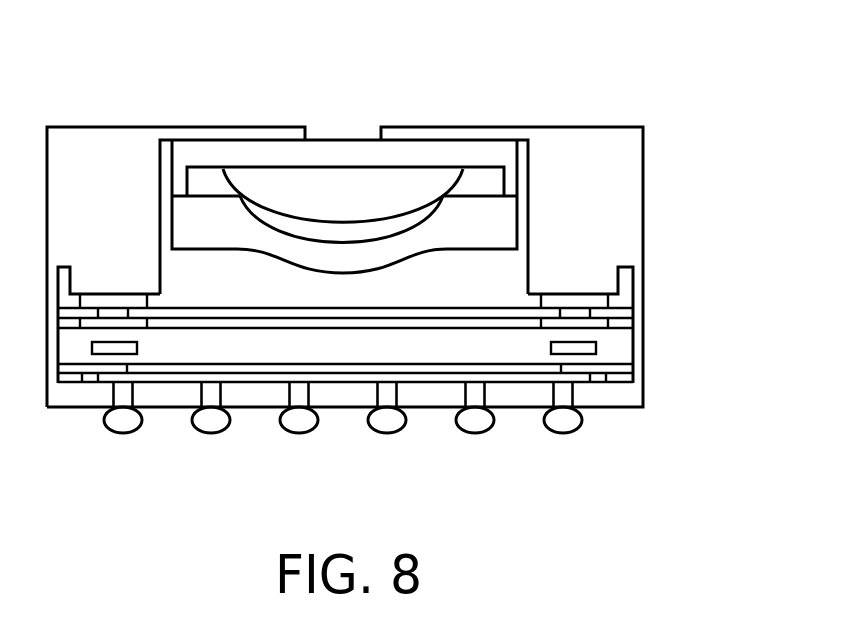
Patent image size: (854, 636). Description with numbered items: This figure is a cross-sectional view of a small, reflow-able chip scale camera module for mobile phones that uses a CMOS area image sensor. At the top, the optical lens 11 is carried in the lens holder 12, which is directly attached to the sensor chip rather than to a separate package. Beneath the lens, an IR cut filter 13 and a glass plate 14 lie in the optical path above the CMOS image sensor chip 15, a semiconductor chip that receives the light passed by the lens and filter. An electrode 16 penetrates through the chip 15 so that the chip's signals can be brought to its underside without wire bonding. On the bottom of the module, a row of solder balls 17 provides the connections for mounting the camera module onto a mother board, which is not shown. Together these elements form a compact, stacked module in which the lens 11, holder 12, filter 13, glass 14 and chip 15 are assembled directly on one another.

The optical lens 11 is at (335, 184).
The lens holder 12 is at (82, 160).
The IR cut filter 13 is at (477, 307).
The glass plate 14 is at (618, 347).
The CMOS image sensor chip 15 is at (520, 378).
The electrode 16 is at (607, 382).
The solder ball 17 is at (213, 423).